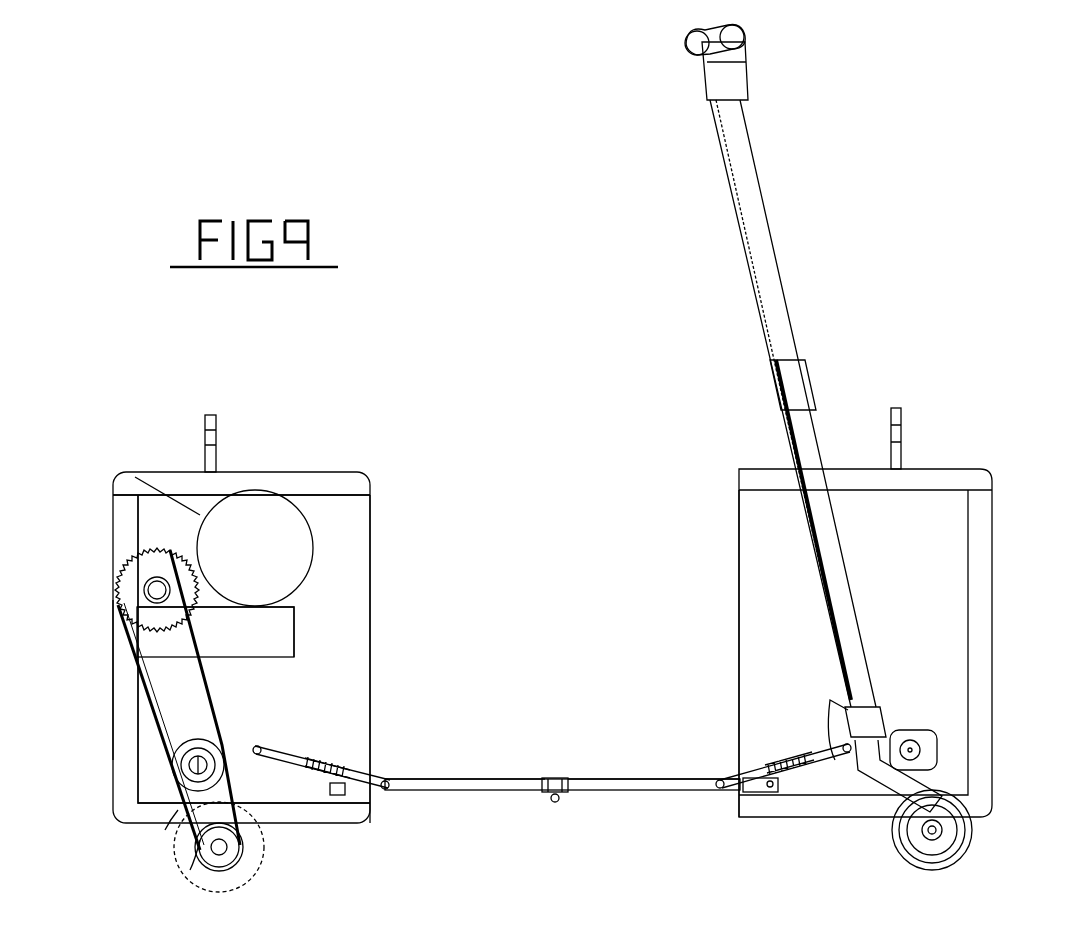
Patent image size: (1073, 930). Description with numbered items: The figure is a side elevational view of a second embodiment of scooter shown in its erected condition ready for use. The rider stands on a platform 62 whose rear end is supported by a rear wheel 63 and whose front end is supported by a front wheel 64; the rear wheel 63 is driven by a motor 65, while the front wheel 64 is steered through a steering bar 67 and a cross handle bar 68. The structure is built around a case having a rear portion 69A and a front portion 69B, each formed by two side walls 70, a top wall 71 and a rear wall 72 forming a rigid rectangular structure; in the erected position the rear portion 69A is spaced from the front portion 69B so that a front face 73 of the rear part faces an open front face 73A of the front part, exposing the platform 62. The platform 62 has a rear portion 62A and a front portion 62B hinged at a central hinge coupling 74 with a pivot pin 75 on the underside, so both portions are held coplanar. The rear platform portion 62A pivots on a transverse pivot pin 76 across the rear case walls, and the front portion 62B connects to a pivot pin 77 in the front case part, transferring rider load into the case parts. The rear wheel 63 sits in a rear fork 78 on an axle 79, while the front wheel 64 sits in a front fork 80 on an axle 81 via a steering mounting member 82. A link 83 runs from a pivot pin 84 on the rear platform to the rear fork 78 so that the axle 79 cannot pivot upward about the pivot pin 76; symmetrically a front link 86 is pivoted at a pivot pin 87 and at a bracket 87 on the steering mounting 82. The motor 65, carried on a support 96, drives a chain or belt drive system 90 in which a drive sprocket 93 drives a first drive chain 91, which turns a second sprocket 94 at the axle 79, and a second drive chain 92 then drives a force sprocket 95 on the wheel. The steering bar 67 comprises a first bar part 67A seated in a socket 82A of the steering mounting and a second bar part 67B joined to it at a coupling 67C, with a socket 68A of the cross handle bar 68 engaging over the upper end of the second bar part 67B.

The platform 62 is at (470, 778).
The rear portion of the platform 62A is at (505, 779).
The front portion of the platform 62B is at (645, 779).
The rear wheel 63 is at (258, 845).
The front wheel 64 is at (972, 832).
The motor 65 is at (300, 545).
The steering bar 67 is at (765, 232).
The first bar part 67A is at (850, 582).
The second bar part 67B is at (785, 282).
The coupling 67C is at (816, 378).
The cross handle bar 68 is at (745, 37).
The socket 68A is at (748, 82).
The rear portion of the case 69A is at (318, 470).
The front portion of the case 69B is at (745, 490).
The side walls 70 is at (360, 645).
The top wall 71 is at (216, 465).
The rear wall 72 is at (120, 635).
The front face 73 is at (372, 695).
The open front face 73A is at (738, 685).
The central hinge coupling 74 is at (565, 796).
The pivot pin 75 is at (550, 800).
The transverse pivot pin 76 is at (335, 775).
The pivot pin 77 is at (772, 770).
The rear fork 78 is at (165, 830).
The axle 79 is at (200, 752).
The front fork 80 is at (935, 760).
The axle 81 is at (910, 745).
The steering mounting member 82 is at (880, 712).
The socket 82A is at (838, 700).
The link 83 is at (278, 757).
The pivot pin 84 is at (386, 780).
The front link 86 is at (815, 760).
The pivot pin 87 is at (735, 782).
The chain or belt drive system 90 is at (145, 710).
The first drive chain 91 is at (215, 640).
The second drive chain 92 is at (188, 850).
The drive sprocket 93 is at (156, 565).
The second sprocket 94 is at (180, 745).
The force sprocket 95 is at (238, 855).
The support 96 is at (290, 615).